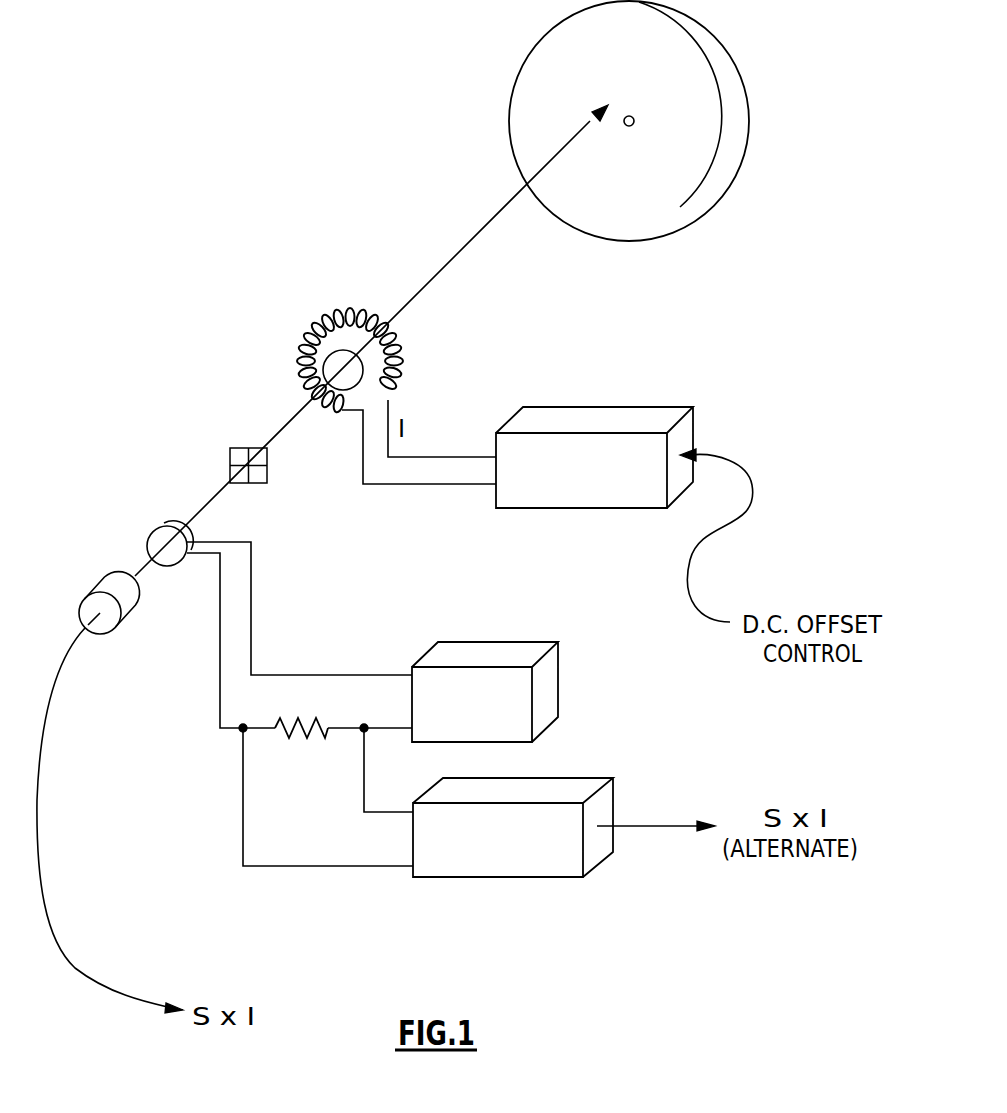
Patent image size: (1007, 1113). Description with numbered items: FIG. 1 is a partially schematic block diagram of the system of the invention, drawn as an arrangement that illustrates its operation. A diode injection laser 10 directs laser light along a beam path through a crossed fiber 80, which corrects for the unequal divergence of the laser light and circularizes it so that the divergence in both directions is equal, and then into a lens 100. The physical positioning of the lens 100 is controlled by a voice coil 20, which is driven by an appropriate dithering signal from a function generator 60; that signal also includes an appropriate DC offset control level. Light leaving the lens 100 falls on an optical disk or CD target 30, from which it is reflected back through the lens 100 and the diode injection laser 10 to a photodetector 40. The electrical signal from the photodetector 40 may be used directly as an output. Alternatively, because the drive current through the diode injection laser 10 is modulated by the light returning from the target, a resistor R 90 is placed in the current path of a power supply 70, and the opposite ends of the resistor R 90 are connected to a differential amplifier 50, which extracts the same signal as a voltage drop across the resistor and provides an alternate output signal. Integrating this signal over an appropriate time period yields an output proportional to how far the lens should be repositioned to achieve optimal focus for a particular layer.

The diode injection laser 10 is at (165, 527).
The voice coil 20 is at (404, 372).
The optical disk or CD target 30 is at (751, 133).
The photodetector 40 is at (125, 620).
The differential amplifier 50 is at (513, 877).
The function generator 60 is at (696, 440).
The power supply 70 is at (560, 664).
The crossed fiber 80 is at (242, 447).
The resistor R 90 is at (292, 714).
The lens 100 is at (400, 338).